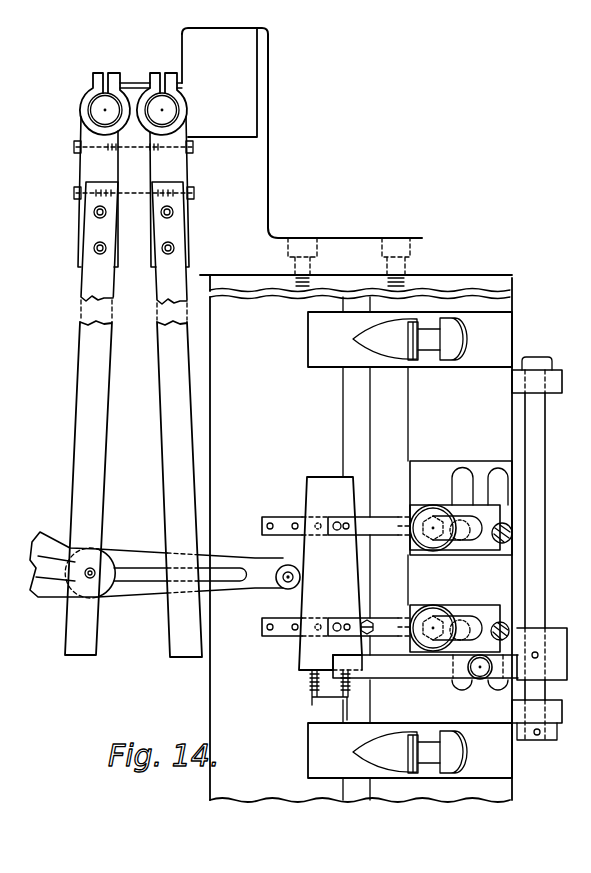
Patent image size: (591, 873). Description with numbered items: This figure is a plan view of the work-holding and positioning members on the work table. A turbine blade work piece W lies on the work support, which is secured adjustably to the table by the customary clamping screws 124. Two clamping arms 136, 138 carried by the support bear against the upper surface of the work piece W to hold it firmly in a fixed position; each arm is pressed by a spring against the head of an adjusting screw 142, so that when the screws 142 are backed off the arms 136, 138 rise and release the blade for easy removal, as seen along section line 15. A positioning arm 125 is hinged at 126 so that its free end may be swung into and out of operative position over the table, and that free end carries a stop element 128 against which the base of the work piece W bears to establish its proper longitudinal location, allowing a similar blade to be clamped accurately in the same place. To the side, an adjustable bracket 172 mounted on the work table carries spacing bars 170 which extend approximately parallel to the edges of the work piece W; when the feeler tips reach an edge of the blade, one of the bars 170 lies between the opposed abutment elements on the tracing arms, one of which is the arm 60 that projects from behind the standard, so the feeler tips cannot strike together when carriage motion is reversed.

The adjustable bracket 172 is at (131, 84).
The spacing bars 170 is at (77, 385).
The arm 60 is at (148, 591).
The turbine blade work piece W is at (323, 487).
The clamping arm 138 is at (386, 518).
The clamping arm 136 is at (392, 612).
The adjusting screw 142 is at (433, 512).
The stop element 128 is at (331, 657).
The positioning arm 125 is at (436, 669).
The clamping screws 124 is at (456, 336).
The hinge 126 is at (536, 358).
The section line 15 is at (252, 492).